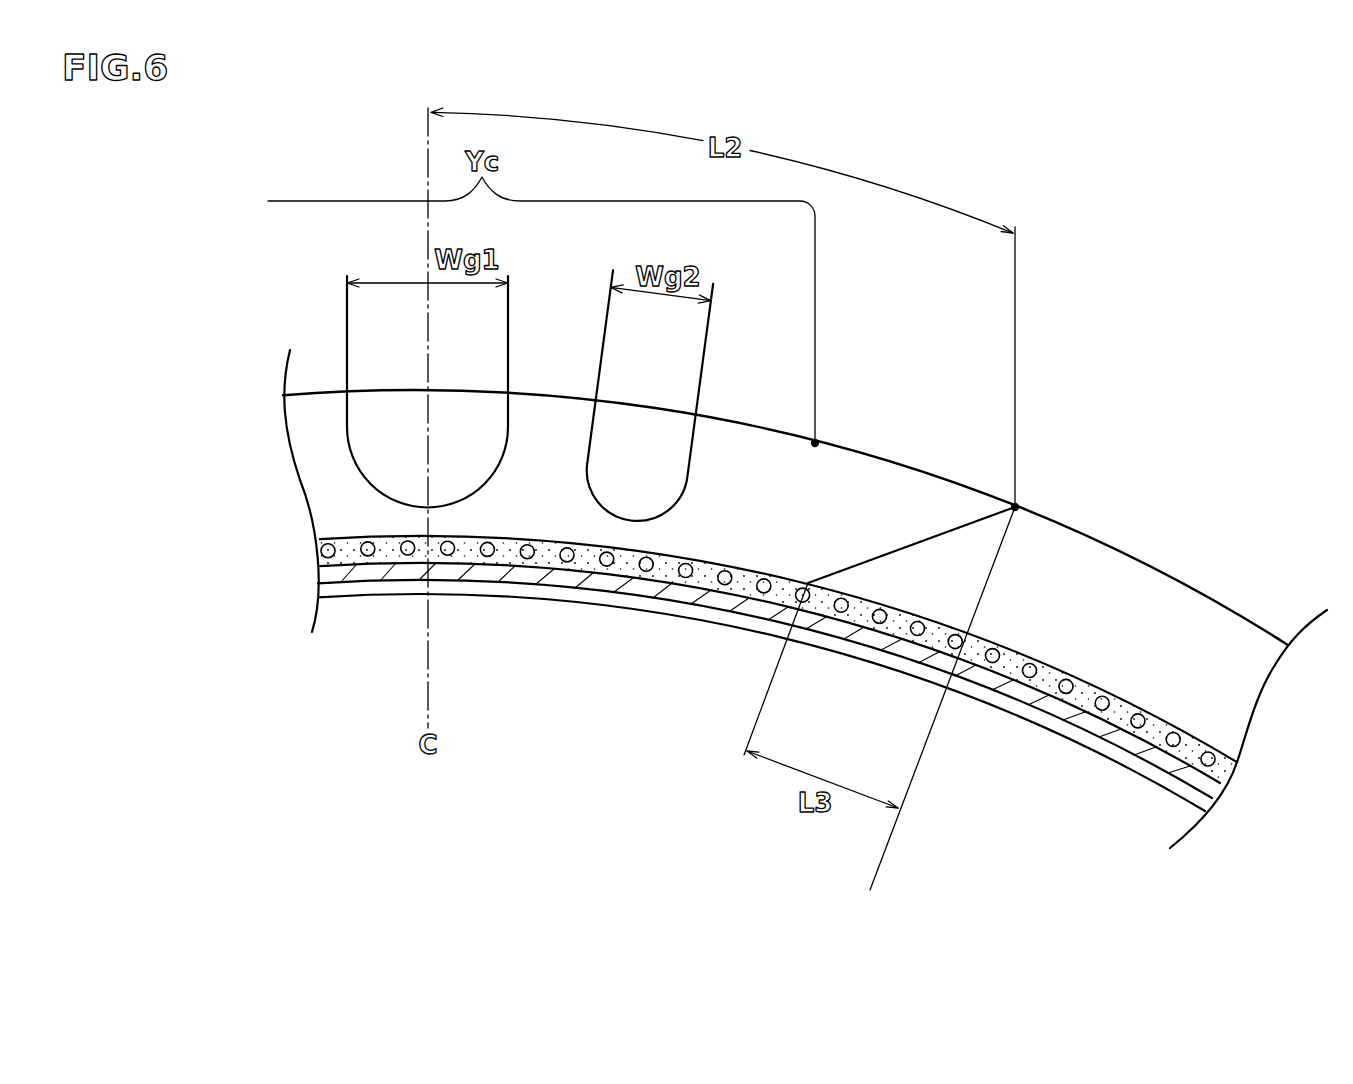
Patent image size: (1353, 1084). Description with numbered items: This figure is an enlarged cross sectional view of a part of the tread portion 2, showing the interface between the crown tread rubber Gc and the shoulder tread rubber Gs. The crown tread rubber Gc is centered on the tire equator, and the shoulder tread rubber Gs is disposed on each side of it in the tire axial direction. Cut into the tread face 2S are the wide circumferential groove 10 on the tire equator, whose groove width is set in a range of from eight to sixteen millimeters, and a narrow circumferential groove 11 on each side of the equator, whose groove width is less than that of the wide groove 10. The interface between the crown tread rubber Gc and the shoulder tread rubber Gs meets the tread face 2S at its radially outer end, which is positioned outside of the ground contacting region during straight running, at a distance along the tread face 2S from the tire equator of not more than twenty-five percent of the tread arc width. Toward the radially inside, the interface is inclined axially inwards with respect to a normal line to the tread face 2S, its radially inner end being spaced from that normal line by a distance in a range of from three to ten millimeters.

The wide circumferential groove 10 is at (462, 410).
The narrow circumferential groove 11 is at (643, 427).
The tread face 2S is at (1135, 558).
The tread portion 2 is at (1171, 668).
The crown tread rubber Gc is at (771, 510).
The shoulder tread rubber Gs is at (1126, 645).